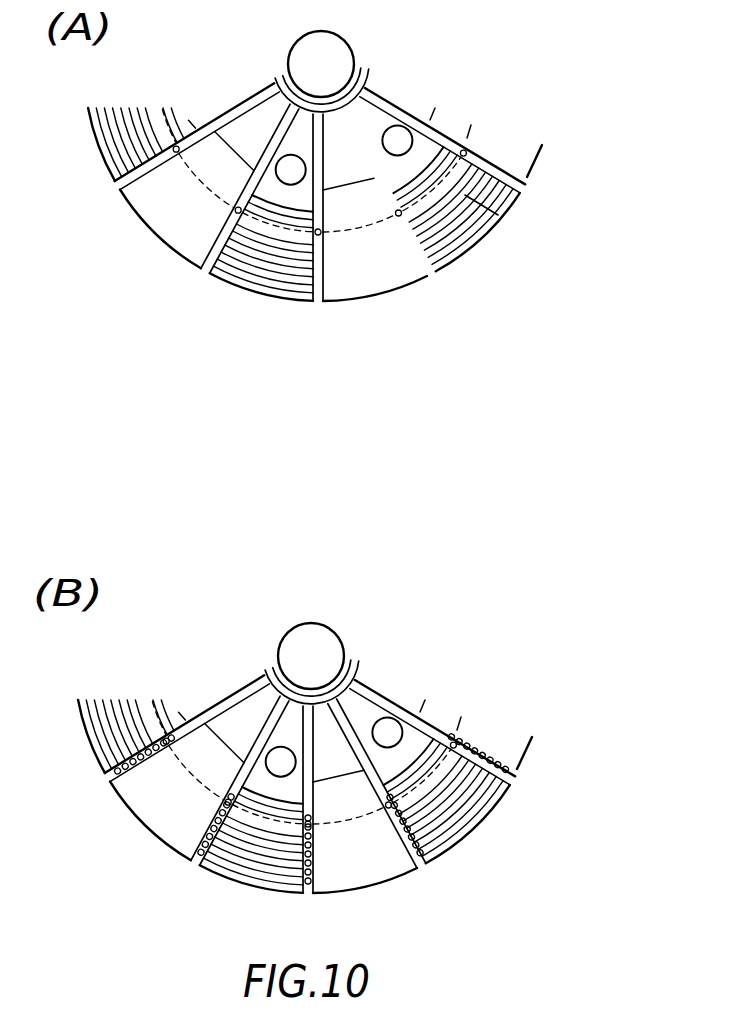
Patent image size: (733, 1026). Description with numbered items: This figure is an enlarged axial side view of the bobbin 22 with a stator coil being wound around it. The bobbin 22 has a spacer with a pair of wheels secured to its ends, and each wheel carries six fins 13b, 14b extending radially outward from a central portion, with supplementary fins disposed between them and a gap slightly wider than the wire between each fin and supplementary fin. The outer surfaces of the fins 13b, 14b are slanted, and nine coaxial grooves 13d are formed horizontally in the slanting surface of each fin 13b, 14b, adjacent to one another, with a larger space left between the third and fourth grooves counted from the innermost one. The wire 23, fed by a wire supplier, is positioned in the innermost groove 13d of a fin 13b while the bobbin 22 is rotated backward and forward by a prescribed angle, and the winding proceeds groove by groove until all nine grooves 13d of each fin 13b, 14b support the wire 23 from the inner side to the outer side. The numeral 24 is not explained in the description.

The fin 14b is at (449, 138).
The bobbin 22 is at (236, 97).
The fin 13b is at (456, 220).
The groove 13d is at (512, 219).
The insulating member 24 is at (251, 226).
The wire 23 is at (311, 832).